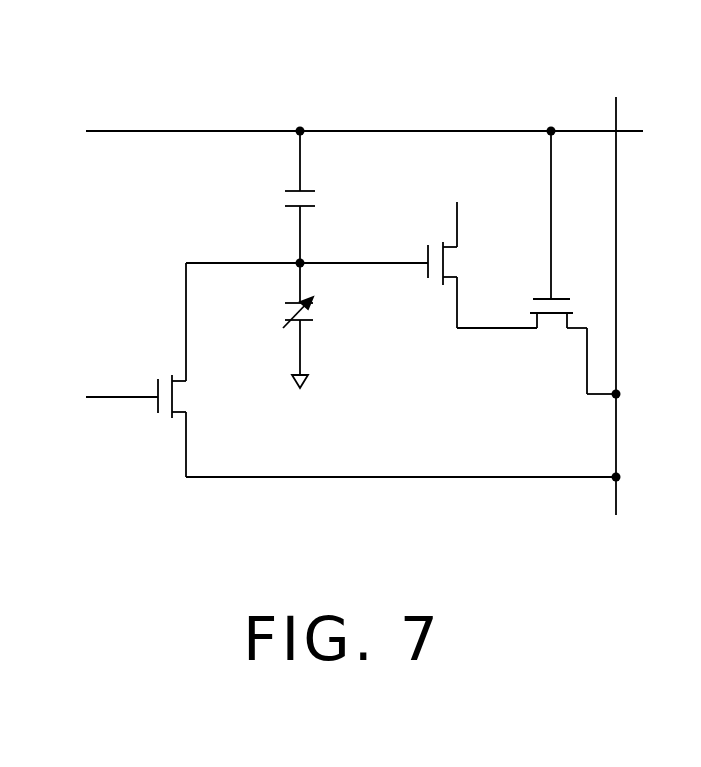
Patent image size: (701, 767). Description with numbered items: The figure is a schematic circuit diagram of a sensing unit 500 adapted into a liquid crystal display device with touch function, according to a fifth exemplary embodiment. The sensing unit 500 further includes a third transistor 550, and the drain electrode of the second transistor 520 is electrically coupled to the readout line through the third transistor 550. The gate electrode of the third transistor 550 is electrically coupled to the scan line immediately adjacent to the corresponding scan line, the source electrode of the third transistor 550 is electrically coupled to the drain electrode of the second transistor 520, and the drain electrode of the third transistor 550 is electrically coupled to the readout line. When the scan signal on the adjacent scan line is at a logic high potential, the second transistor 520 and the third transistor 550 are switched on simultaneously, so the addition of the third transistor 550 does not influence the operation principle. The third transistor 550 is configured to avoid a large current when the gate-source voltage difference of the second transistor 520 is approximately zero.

The sensing unit 500 is at (330, 36).
The second transistor 520 is at (450, 285).
The third transistor 550 is at (548, 316).